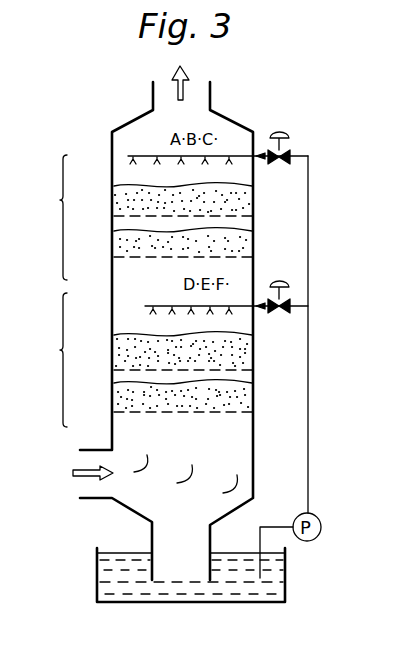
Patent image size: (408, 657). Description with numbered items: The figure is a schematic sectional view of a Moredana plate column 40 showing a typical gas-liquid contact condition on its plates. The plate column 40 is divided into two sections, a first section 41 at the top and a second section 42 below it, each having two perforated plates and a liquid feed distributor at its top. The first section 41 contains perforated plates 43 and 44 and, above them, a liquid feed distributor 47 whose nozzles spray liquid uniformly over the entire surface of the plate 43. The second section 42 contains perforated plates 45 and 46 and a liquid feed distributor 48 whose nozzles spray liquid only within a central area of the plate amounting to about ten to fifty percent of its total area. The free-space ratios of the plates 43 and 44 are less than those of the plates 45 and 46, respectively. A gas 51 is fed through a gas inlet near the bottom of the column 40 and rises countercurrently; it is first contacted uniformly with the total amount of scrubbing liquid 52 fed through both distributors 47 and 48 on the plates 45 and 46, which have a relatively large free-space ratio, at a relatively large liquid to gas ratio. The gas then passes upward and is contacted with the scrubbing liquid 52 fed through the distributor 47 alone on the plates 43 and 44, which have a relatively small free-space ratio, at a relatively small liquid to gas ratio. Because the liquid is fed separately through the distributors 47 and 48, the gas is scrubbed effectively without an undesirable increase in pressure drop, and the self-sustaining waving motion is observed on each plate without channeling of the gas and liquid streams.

The plate column 40 is at (295, 411).
The first section 41 is at (49, 217).
The second section 42 is at (49, 360).
The perforated plate 43 is at (116, 217).
The perforated plate 44 is at (116, 257).
The perforated plate 45 is at (116, 370).
The perforated plate 46 is at (116, 412).
The liquid feed distributor 47 is at (240, 156).
The liquid feed distributor 48 is at (235, 306).
The gas 51 is at (73, 471).
The scrubbing liquid 52 is at (228, 590).